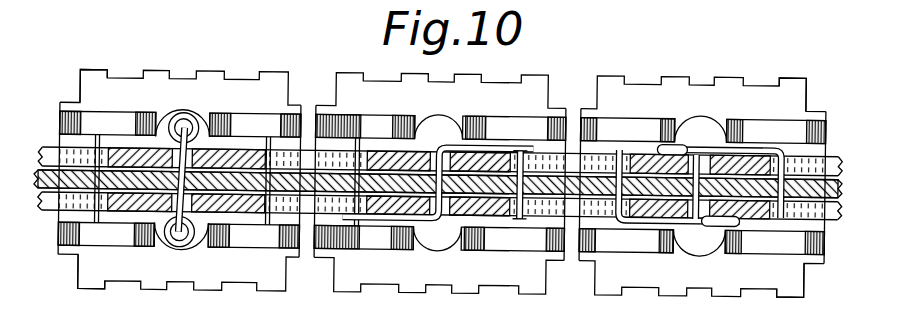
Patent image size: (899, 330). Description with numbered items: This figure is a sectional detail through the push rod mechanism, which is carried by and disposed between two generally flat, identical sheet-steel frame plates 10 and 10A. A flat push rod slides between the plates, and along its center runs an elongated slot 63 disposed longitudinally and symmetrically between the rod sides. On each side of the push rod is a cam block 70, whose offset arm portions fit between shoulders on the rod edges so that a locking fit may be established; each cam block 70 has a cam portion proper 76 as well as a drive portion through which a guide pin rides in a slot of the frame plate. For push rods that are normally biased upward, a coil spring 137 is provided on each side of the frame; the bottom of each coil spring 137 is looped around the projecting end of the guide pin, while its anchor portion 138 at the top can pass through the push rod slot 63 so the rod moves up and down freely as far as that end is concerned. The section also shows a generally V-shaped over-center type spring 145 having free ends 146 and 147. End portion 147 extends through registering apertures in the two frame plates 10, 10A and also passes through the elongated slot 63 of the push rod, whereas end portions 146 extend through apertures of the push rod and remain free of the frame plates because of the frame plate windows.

The frame plate 10 is at (50, 153).
The frame plate 10A is at (44, 227).
The elongated slot 63 is at (477, 270).
The cam block 70 is at (253, 72).
The cam portion 76 is at (97, 75).
The coil spring 137 is at (175, 115).
The anchor portion 138 is at (200, 160).
The over-center spring 145 is at (428, 236).
The free end of over-center spring 146 is at (507, 157).
The free end of over-center spring 147 is at (447, 143).